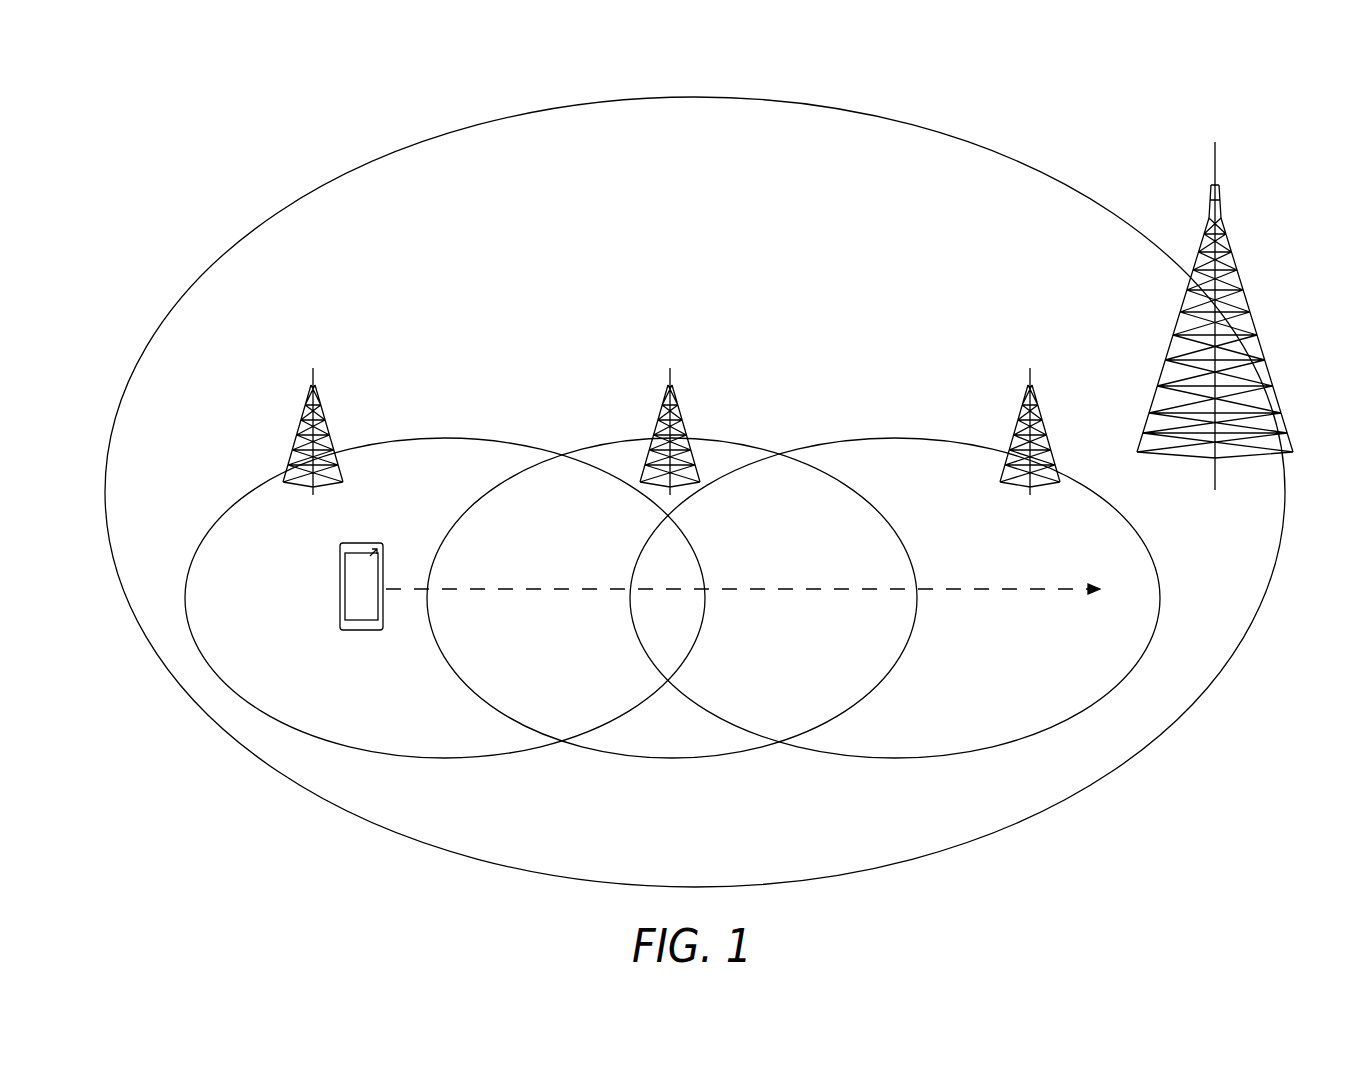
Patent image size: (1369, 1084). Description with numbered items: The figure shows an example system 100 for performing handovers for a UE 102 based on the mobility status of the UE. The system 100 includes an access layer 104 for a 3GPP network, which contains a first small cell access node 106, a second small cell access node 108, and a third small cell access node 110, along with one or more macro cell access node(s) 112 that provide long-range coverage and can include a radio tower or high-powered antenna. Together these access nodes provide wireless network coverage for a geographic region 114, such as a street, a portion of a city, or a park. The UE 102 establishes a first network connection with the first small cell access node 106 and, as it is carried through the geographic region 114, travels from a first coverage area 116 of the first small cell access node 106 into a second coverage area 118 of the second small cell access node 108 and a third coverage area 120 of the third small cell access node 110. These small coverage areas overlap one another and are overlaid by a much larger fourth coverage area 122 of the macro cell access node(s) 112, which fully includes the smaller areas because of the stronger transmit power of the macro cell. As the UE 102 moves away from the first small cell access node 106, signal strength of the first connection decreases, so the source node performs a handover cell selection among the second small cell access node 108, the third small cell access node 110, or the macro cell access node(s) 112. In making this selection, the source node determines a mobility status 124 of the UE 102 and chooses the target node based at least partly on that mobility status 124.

The system 100 is at (158, 80).
The UE 102 is at (340, 586).
The access layer 104 is at (1148, 781).
The first small cell access node 106 is at (300, 431).
The second small cell access node 108 is at (662, 431).
The third small cell access node 110 is at (1022, 429).
The macro cell access node(s) 112 is at (1250, 313).
The geographic region 114 is at (713, 173).
The first coverage area 116 is at (452, 483).
The second coverage area 118 is at (689, 743).
The third coverage area 120 is at (932, 483).
The fourth coverage area 122 is at (464, 126).
The mobility status 124 is at (557, 588).